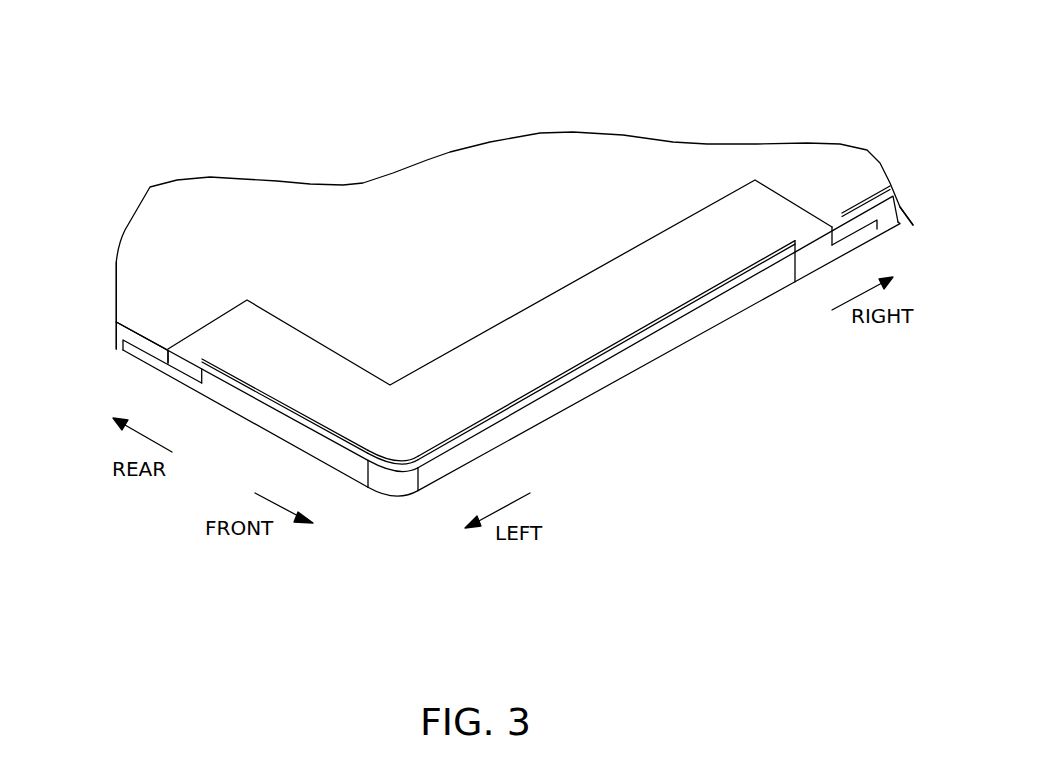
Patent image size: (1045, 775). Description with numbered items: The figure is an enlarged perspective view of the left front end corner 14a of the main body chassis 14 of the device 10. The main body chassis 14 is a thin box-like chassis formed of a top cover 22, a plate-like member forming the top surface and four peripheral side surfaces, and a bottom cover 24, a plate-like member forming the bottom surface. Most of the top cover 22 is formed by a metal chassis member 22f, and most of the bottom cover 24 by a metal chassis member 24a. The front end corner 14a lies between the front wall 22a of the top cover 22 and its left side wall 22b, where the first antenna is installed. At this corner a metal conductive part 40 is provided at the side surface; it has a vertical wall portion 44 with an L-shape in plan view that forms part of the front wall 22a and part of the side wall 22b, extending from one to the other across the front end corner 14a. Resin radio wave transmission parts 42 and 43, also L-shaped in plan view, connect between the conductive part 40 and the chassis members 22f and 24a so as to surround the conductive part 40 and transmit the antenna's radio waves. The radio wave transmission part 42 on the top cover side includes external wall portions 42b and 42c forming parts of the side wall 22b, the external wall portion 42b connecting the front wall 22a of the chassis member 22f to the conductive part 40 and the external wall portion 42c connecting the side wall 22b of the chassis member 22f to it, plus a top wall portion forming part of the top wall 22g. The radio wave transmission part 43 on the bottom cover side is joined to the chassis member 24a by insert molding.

The electronic device 10 is at (80, 84).
The main body chassis 14 is at (728, 424).
The front end corner 14a is at (390, 484).
The top cover 22 is at (578, 248).
The front wall 22a is at (898, 227).
The left side wall 22b is at (116, 327).
The chassis member 22f is at (382, 203).
The top wall 22g is at (563, 178).
The bottom cover 24 is at (650, 366).
The chassis member 24a is at (116, 350).
The conductive part 40 is at (442, 492).
The radio wave transmission part 42 is at (555, 358).
The external wall portion 42b is at (815, 262).
The external wall portion 42c is at (141, 356).
The radio wave transmission part 43 is at (187, 390).
The vertical wall portion 44 is at (335, 462).